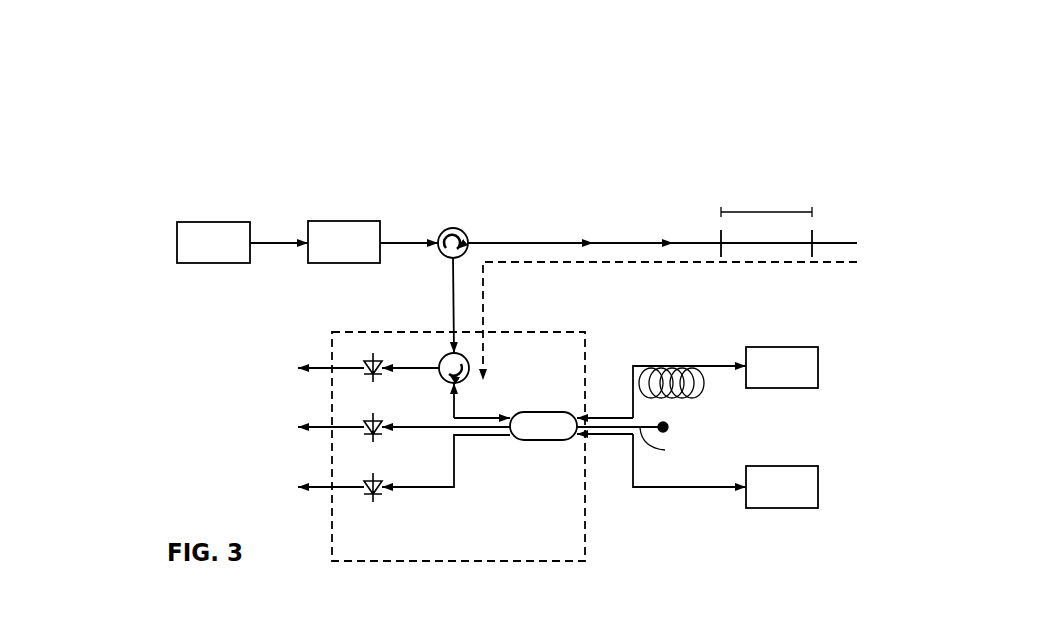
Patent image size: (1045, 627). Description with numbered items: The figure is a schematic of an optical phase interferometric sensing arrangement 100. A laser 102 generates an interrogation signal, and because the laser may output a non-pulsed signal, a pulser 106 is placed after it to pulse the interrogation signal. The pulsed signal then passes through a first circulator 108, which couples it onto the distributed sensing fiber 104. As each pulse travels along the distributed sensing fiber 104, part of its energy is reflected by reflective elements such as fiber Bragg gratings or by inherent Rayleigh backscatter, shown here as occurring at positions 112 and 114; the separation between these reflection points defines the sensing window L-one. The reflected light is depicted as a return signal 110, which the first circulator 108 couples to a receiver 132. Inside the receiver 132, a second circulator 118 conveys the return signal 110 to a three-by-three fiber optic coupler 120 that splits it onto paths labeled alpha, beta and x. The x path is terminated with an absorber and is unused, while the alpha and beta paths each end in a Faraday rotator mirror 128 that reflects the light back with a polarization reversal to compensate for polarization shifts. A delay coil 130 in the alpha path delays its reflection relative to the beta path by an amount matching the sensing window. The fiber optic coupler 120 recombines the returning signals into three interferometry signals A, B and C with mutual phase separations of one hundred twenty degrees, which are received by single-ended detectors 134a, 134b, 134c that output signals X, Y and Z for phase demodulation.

The optical phase interferometric sensing arrangement 100 is at (150, 136).
The laser 102 is at (214, 222).
The distributed sensing fiber 104 is at (546, 242).
The pulser 106 is at (347, 221).
The first circulator 108 is at (454, 228).
The return signal 110 is at (662, 264).
The reflection point (first position) 112 is at (720, 232).
The reflection point (second position) 114 is at (814, 232).
The second circulator 118 is at (468, 364).
The 3×3 fiber optic coupler 120 is at (543, 440).
The Faraday rotator mirror 128 is at (783, 347).
The delay coil 130 is at (698, 399).
The receiver 132 is at (393, 332).
The single-ended detector 134a is at (363, 370).
The single-ended detector 134b is at (363, 429).
The single-ended detector 134c is at (363, 489).